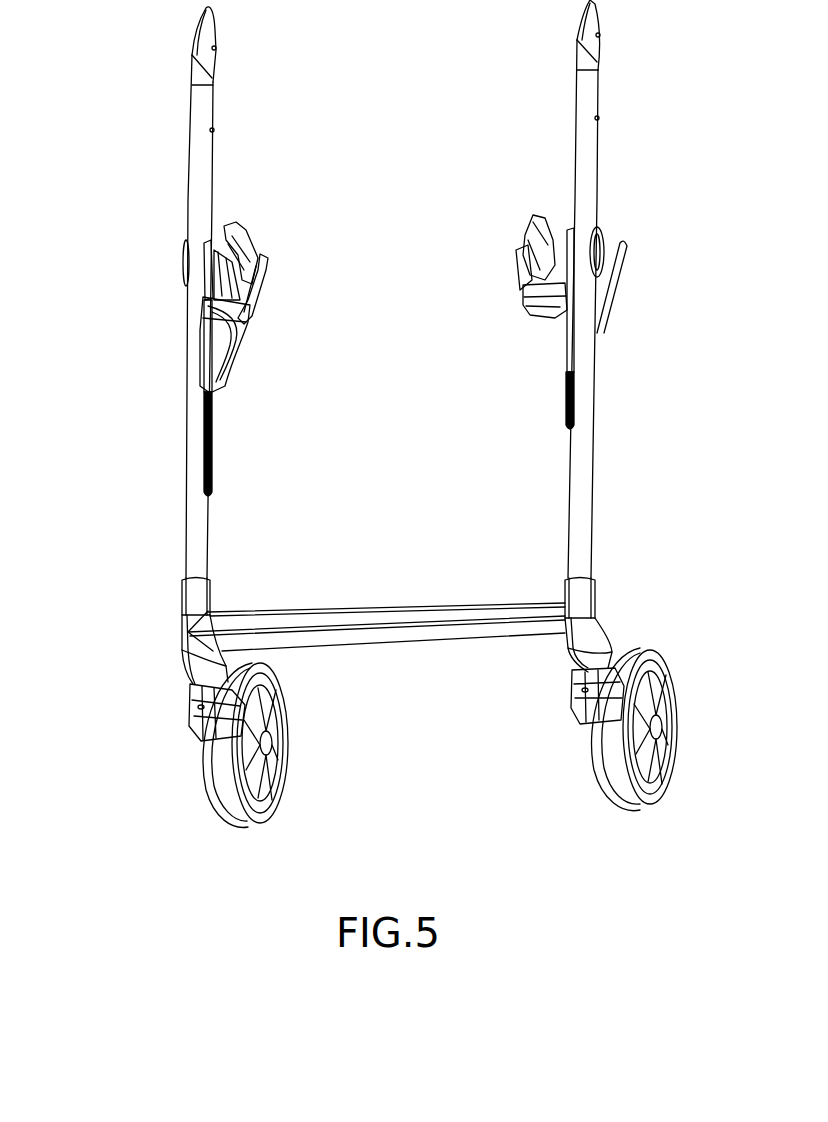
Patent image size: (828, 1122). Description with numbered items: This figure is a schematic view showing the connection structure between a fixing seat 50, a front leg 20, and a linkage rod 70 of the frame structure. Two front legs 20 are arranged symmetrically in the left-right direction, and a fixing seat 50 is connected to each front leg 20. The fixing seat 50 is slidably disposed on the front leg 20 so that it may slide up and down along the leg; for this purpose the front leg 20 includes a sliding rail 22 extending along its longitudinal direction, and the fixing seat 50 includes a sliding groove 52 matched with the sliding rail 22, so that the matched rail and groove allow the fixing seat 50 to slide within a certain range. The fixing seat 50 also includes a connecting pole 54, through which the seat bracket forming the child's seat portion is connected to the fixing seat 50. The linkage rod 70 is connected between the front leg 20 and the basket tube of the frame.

The front leg 20 is at (195, 532).
The sliding rail 22 is at (212, 452).
The fixing seat 50 is at (248, 245).
The sliding groove 52 is at (202, 397).
The connecting pole 54 is at (253, 278).
The linkage rod 70 is at (240, 342).